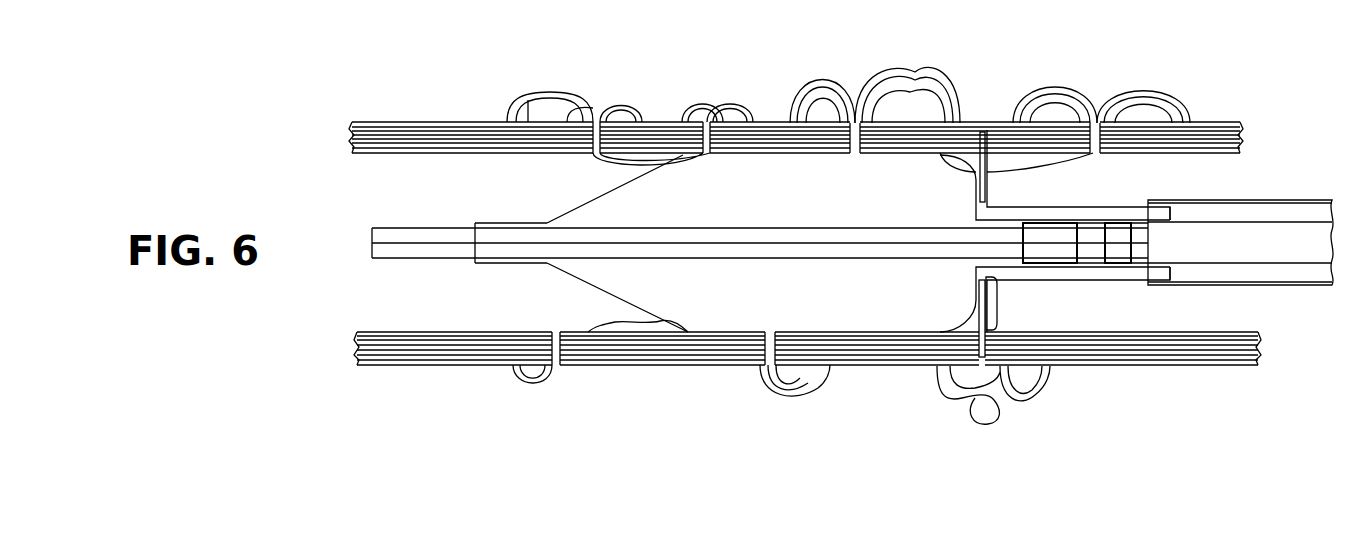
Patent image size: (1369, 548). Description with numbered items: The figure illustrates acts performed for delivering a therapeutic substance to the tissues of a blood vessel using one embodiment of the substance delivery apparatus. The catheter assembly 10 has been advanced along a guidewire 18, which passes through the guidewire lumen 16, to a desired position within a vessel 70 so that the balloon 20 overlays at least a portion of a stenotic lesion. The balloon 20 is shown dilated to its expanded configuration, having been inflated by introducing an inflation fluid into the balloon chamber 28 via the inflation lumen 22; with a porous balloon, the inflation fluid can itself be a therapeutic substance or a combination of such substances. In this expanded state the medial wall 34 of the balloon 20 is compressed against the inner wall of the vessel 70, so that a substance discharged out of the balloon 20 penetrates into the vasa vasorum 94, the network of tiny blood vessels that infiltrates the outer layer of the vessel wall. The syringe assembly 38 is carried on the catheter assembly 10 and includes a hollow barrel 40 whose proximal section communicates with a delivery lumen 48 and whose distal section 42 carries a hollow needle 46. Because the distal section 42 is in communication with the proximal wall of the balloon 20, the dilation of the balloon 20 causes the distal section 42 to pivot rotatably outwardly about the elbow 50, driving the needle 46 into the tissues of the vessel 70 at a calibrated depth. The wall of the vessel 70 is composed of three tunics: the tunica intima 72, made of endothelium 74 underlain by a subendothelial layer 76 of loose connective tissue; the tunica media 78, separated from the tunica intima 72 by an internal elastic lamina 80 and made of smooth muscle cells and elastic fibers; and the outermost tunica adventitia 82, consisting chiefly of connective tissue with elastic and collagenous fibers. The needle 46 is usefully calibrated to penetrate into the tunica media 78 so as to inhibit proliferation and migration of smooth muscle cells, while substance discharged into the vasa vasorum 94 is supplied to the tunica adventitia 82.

The catheter assembly 10 is at (381, 287).
The guidewire lumen 16 is at (434, 233).
The guidewire 18 is at (399, 243).
The balloon 20 is at (549, 199).
The inflation lumen 22 is at (1095, 235).
The balloon chamber 28 is at (786, 206).
The medial wall 34 is at (830, 332).
The syringe assembly 38 is at (997, 195).
The hollow barrel 40 is at (1070, 212).
The distal section 42 is at (998, 307).
The hollow needle 46 is at (960, 372).
The delivery lumen 48 is at (1283, 213).
The elbow 50 is at (978, 270).
The vessel 70 is at (388, 110).
The tunica intima 72 is at (356, 333).
The endothelium 74 is at (360, 350).
The subendothelial layer 76 is at (408, 345).
The tunica media 78 is at (478, 355).
The internal elastic lamina 80 is at (445, 348).
The tunica adventitia 82 is at (500, 362).
The vasa vasorum 94 is at (595, 102).